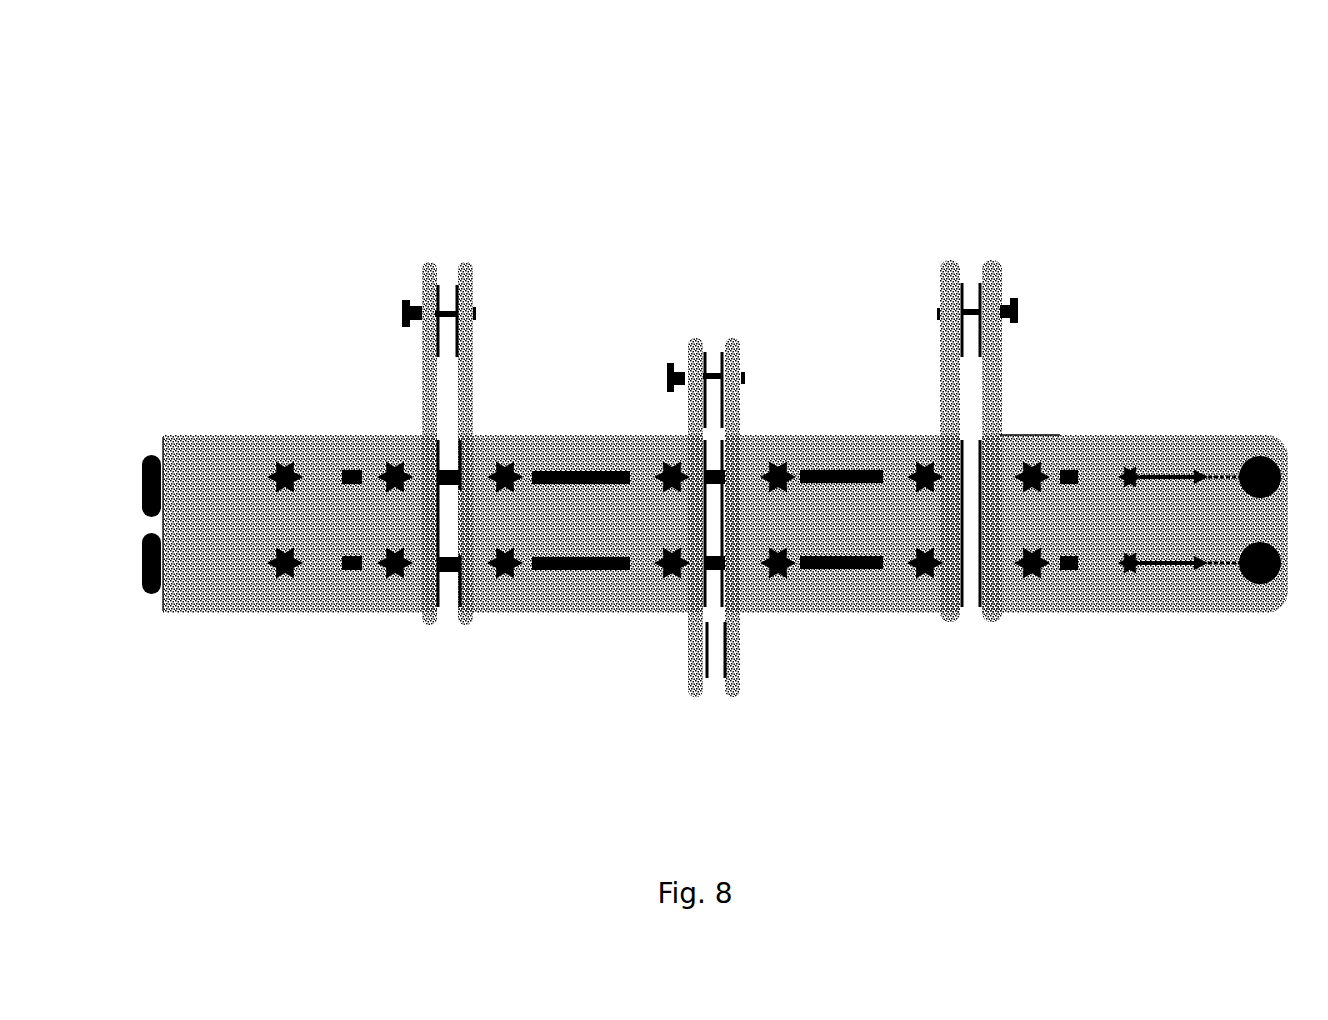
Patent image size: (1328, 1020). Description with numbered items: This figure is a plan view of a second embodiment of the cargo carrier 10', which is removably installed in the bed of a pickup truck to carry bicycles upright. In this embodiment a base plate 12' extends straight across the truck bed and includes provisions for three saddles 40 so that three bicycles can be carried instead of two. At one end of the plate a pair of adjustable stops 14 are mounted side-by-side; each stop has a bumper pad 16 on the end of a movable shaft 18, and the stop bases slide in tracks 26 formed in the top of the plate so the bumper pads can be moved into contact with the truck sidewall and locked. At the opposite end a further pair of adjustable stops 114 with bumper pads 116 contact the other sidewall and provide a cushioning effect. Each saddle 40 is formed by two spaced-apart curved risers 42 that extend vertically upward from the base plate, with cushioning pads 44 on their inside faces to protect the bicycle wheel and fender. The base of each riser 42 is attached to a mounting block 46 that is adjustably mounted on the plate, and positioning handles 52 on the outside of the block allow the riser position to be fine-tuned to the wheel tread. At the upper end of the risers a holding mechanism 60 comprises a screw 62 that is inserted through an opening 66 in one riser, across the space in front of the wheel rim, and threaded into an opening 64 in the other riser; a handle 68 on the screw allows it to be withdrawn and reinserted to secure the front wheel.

The cargo carrier 10' is at (700, 462).
The base plate 12' is at (725, 508).
The adjustable stop 14 is at (1157, 440).
The bumper pad 16 is at (1260, 455).
The movable shaft 18 is at (1185, 468).
The track 26 is at (578, 485).
The saddle 40 is at (447, 640).
The riser 42 is at (470, 285).
The cushioning pad 44 is at (395, 460).
The mounting block 46 is at (380, 436).
The positioning handle 52 is at (393, 552).
The holding mechanism 60 is at (744, 433).
The screw 62 is at (444, 311).
The opening 64 is at (437, 308).
The opening 66 is at (458, 322).
The handle 68 is at (403, 308).
The adjustable stop 114 is at (232, 465).
The bumper pad 116 is at (150, 455).